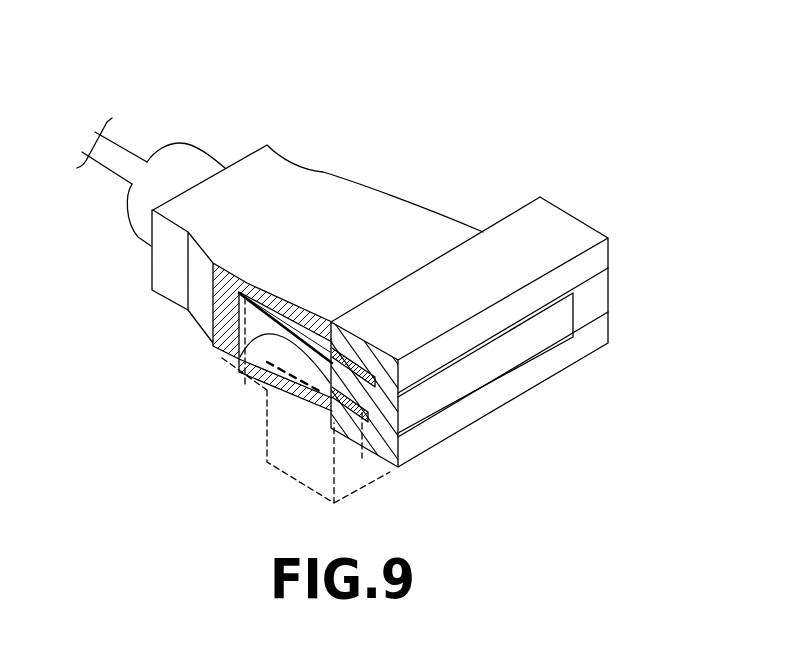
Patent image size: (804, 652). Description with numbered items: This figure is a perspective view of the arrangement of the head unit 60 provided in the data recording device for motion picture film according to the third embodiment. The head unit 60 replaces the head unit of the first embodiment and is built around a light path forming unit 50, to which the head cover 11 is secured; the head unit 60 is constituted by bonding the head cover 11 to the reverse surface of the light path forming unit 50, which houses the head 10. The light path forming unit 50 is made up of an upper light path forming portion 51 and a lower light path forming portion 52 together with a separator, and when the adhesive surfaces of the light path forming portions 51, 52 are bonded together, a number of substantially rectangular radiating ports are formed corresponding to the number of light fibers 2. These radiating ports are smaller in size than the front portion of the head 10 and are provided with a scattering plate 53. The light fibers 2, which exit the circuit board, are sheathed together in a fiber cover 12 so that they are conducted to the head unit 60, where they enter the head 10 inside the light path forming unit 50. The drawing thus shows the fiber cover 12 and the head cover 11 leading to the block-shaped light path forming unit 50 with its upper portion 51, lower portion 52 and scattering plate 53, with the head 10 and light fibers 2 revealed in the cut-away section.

The light fibers 2 is at (238, 365).
The head 10 is at (330, 410).
The head cover 11 is at (340, 193).
The fiber cover 12 is at (120, 160).
The light path forming unit 50 is at (548, 183).
The upper light path forming portion 51 is at (575, 230).
The lower light path forming portion 52 is at (582, 350).
The scattering plate 53 is at (510, 362).
The head unit 60 is at (443, 147).